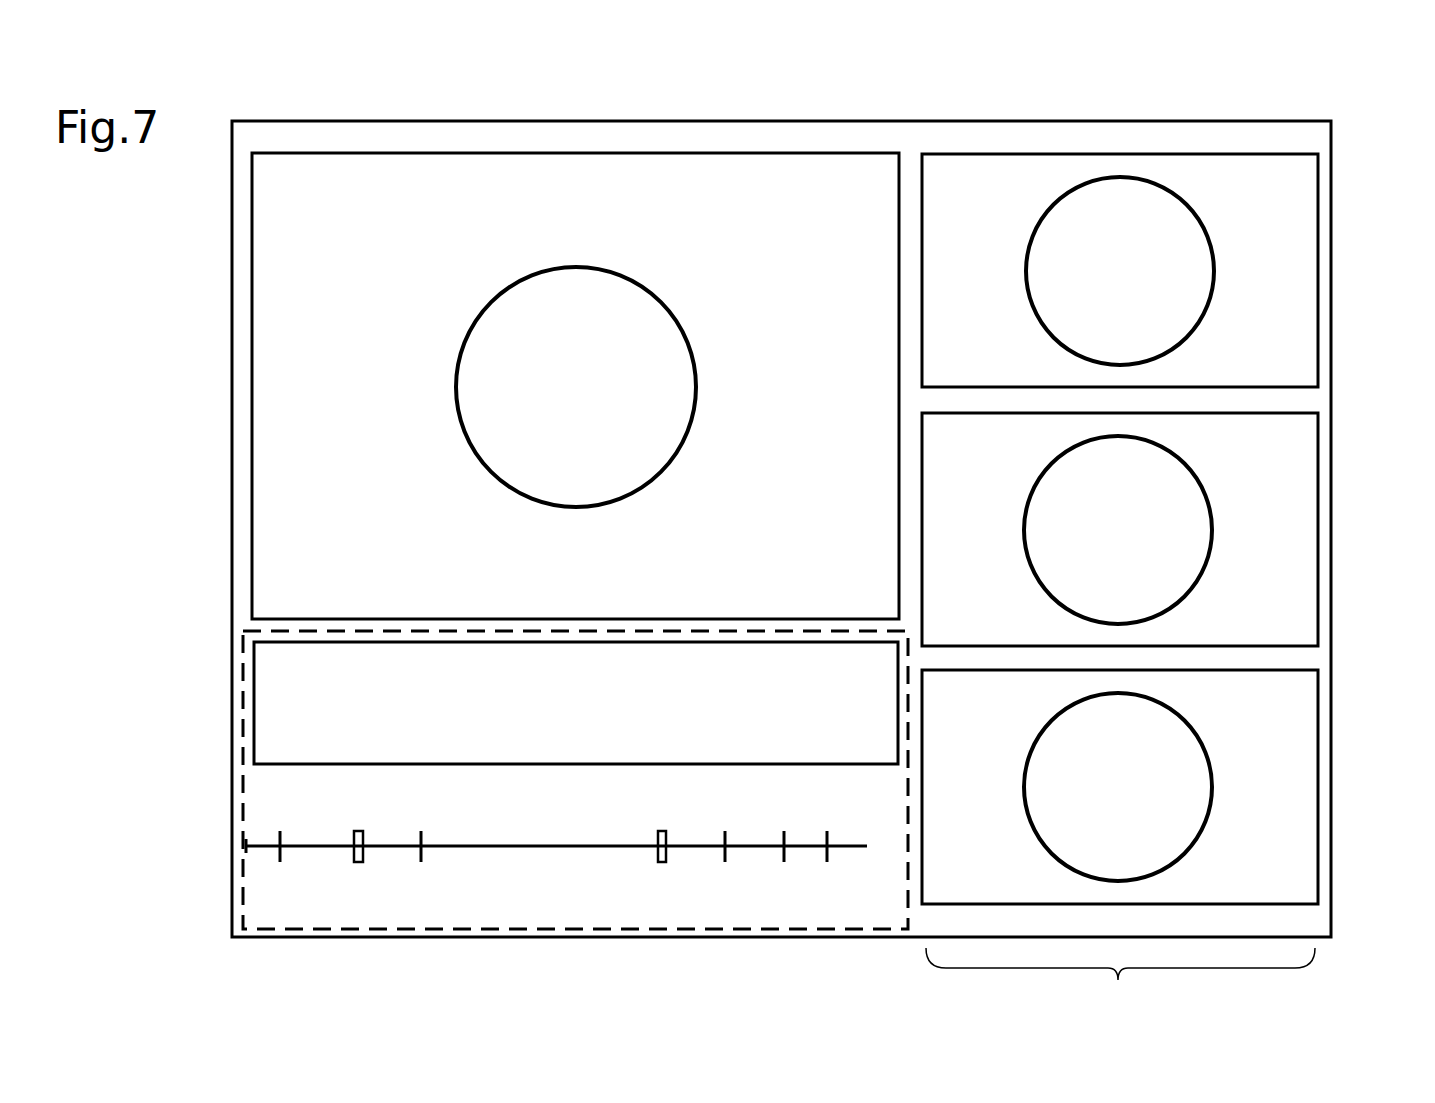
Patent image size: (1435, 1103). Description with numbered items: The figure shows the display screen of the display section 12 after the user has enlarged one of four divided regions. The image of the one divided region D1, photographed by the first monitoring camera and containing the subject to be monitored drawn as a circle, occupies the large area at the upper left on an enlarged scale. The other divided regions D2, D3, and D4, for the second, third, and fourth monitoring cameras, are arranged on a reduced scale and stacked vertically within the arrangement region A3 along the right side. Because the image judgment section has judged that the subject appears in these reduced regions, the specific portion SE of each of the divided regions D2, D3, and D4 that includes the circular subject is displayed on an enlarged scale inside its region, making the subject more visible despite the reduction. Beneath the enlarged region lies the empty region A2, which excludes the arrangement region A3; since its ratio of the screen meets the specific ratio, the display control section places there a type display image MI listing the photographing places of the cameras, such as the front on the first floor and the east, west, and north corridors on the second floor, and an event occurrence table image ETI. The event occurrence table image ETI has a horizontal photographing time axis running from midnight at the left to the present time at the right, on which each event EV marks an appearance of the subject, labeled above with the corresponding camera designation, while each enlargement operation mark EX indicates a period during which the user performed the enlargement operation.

The display section 12 is at (1332, 136).
The divided region D1 is at (252, 295).
The divided region D2 is at (1318, 318).
The divided region D3 is at (1318, 535).
The divided region D4 is at (1318, 760).
The specific portion SE is at (1290, 232).
The empty region A2 is at (590, 925).
The type display image MI is at (570, 748).
The event occurrence table image ETI is at (482, 902).
The event EV is at (280, 862).
The enlargement operation mark EX is at (360, 862).
The arrangement region A3 is at (1120, 981).